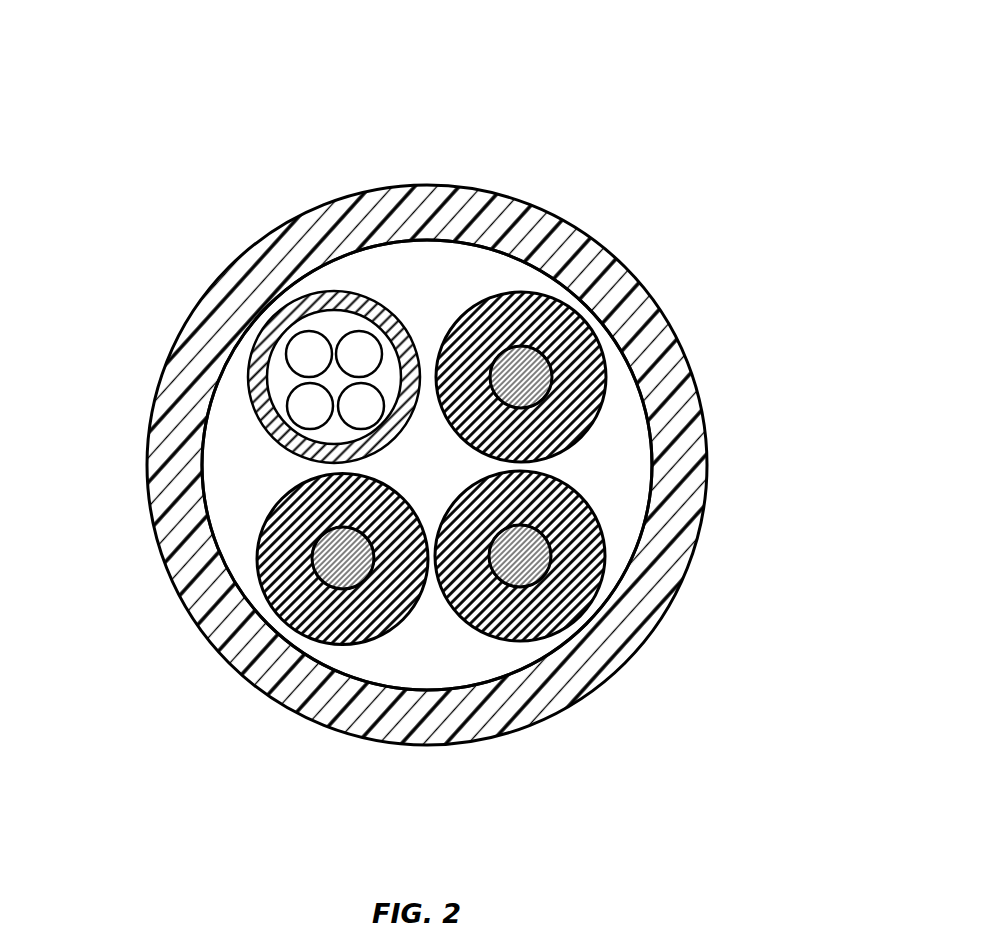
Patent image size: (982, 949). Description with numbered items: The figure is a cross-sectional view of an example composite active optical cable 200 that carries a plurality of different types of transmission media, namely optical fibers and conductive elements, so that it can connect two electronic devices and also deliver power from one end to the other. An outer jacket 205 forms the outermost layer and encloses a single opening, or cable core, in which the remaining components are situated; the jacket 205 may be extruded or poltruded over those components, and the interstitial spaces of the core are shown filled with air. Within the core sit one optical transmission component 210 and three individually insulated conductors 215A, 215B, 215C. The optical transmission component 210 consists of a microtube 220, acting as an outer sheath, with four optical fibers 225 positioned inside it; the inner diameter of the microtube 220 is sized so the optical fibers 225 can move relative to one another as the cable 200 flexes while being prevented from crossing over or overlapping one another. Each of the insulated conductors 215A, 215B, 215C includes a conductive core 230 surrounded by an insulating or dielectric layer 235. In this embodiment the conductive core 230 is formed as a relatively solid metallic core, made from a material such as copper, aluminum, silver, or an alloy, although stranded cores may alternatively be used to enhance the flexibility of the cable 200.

The composite active optical cable 200 is at (185, 103).
The outer jacket 205 is at (627, 257).
The optical transmission component 210 is at (252, 427).
The insulated conductor 215A is at (638, 307).
The insulated conductor 215B is at (608, 545).
The insulated conductor 215C is at (323, 652).
The microtube 220 is at (237, 324).
The optical fibers 225 is at (310, 355).
The conductive core 230 is at (543, 378).
The insulating layer 235 is at (563, 415).